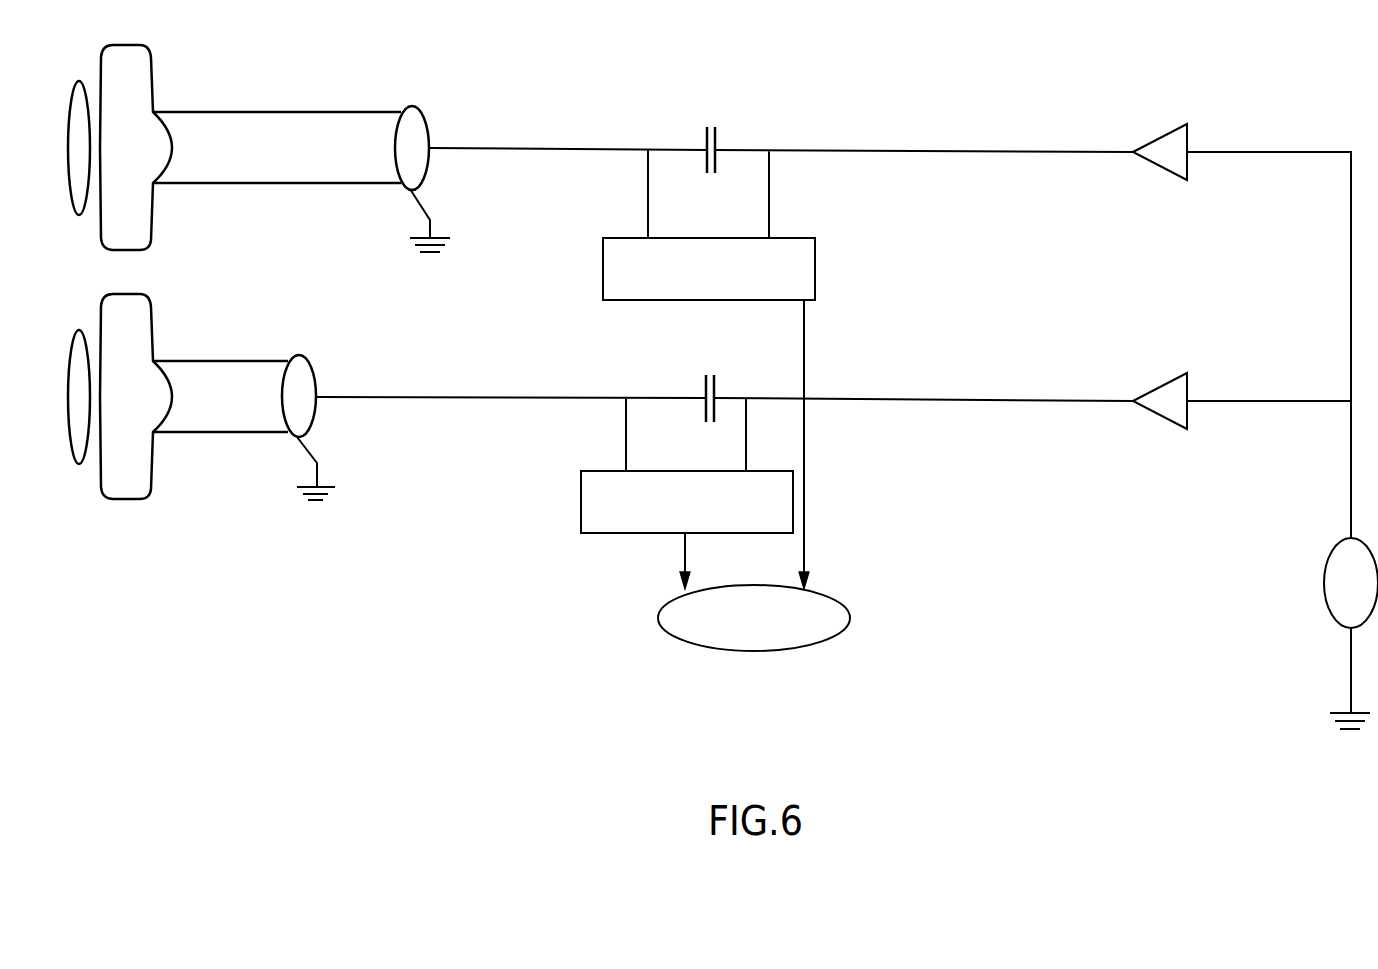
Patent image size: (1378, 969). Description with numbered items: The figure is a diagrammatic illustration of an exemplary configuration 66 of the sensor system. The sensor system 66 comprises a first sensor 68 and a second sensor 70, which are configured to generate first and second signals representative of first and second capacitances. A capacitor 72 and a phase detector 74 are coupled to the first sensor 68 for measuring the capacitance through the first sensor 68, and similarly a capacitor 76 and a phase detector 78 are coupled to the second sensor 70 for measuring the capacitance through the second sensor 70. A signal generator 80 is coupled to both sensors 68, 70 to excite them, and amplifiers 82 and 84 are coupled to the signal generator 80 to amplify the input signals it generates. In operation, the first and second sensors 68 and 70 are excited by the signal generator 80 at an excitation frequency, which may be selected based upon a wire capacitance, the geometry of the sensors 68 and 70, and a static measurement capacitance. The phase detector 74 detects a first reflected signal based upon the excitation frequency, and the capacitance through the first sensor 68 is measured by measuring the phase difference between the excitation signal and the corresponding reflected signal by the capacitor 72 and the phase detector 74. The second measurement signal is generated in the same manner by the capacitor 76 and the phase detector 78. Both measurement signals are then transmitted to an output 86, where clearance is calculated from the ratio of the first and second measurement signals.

The sensor system configuration 66 is at (178, 650).
The first sensor 68 is at (430, 128).
The second sensor 70 is at (317, 375).
The capacitor 72 is at (715, 138).
The phase detector 74 is at (815, 268).
The capacitor 76 is at (714, 385).
The phase detector 78 is at (581, 502).
The signal generator 80 is at (1323, 582).
The amplifier 82 is at (1160, 138).
The amplifier 84 is at (1160, 388).
The output 86 is at (658, 615).